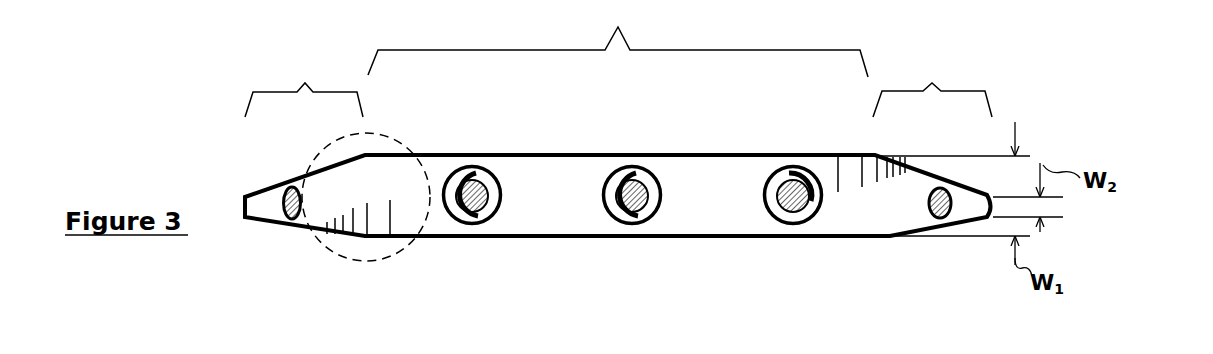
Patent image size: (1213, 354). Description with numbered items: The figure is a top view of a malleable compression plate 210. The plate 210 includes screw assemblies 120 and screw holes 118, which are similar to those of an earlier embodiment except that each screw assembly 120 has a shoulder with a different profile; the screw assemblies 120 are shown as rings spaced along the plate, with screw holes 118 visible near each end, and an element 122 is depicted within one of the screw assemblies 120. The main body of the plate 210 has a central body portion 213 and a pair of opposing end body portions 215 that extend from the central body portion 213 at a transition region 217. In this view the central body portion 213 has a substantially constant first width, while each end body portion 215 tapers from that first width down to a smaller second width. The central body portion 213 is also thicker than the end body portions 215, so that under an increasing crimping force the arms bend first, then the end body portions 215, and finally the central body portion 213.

The malleable compression plate 210 is at (1062, 111).
The central body portion 213 is at (518, 48).
The end body portions 215 is at (278, 92).
The transition region 217 is at (328, 250).
The screw holes 118 is at (285, 185).
The screw assemblies 120 is at (500, 192).
The insert in ring 122 is at (637, 196).